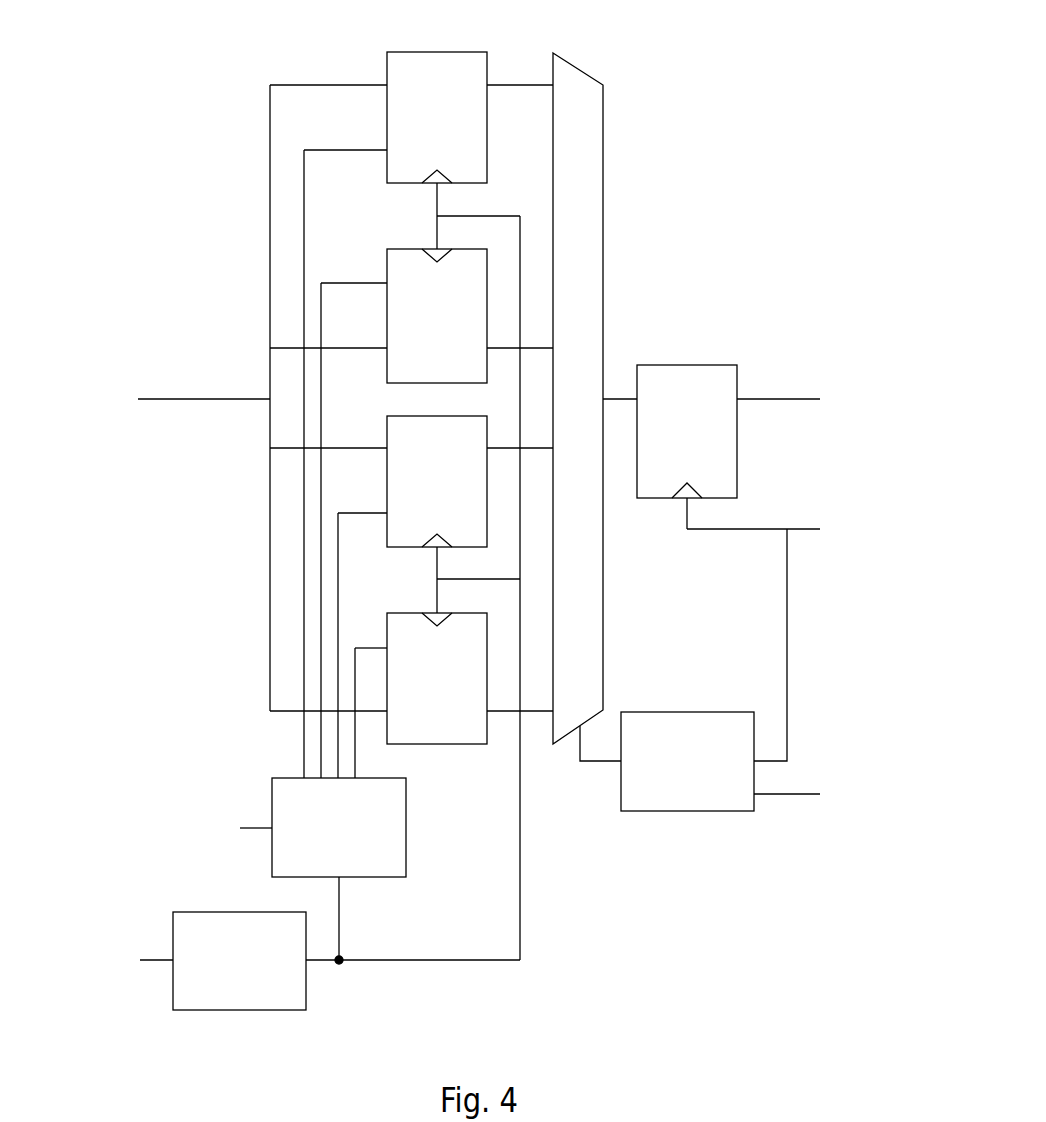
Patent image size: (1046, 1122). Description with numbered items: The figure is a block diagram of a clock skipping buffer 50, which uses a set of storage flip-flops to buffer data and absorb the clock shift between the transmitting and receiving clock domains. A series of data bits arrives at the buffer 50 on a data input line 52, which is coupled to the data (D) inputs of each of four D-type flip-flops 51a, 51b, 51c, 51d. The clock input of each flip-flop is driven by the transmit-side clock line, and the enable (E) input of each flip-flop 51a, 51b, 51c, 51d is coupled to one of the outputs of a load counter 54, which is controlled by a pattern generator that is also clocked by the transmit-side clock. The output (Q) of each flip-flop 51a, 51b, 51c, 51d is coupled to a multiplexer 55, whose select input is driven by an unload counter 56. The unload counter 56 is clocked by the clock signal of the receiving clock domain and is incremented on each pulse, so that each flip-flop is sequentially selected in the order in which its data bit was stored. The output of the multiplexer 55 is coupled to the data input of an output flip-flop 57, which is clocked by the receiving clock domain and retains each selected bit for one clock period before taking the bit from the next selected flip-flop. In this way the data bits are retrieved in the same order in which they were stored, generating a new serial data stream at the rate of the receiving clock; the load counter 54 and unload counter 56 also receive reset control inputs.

The buffer 50 is at (640, 115).
The D-type flip-flop 51a is at (435, 50).
The D-type flip-flop 51b is at (413, 248).
The D-type flip-flop 51c is at (405, 548).
The D-type flip-flop 51d is at (438, 745).
The data input line 52 is at (205, 397).
The load counter 54 is at (339, 827).
The multiplexer 55 is at (595, 407).
The unload counter 56 is at (687, 761).
The flip-flop 57 is at (688, 363).